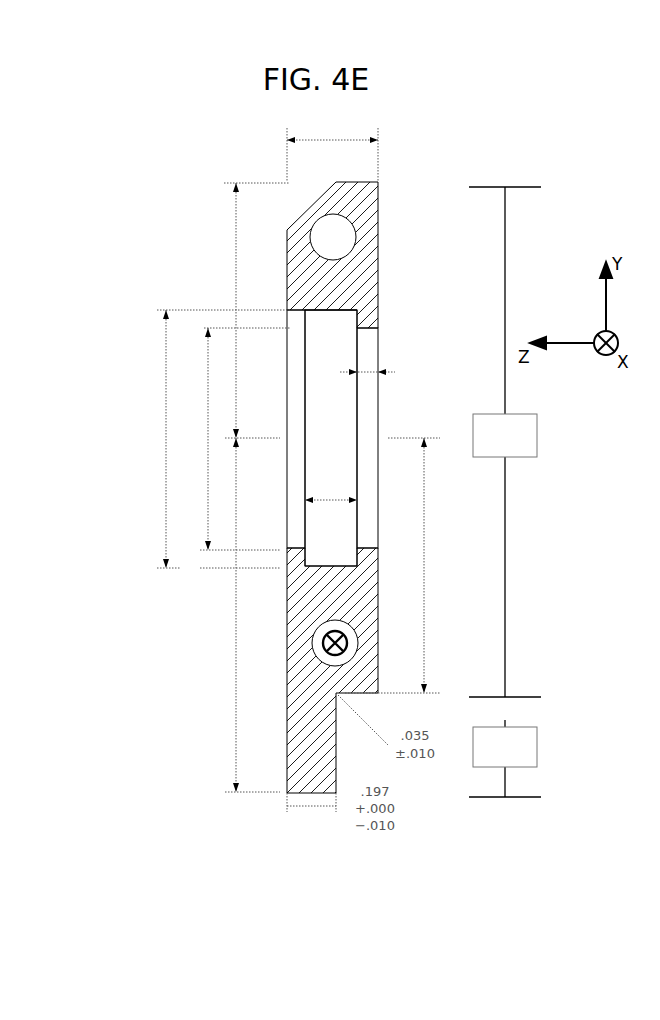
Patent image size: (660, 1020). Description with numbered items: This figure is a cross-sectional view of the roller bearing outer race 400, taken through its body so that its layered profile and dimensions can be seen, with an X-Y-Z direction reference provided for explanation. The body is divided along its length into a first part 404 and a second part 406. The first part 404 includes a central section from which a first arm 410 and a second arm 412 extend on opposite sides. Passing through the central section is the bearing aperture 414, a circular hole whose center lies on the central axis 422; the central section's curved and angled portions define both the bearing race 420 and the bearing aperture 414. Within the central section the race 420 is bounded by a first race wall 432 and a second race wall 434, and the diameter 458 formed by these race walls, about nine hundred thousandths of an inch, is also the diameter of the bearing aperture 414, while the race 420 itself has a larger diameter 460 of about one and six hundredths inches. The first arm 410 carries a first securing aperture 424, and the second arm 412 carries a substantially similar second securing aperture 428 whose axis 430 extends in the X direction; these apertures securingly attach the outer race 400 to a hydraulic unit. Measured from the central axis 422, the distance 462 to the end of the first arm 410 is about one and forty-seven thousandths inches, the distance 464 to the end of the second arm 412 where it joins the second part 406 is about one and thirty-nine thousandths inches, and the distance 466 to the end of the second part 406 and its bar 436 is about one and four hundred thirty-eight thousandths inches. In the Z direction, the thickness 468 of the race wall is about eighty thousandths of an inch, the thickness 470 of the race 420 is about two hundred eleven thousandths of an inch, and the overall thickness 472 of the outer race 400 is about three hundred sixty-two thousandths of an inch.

The roller bearing outer race 400 is at (441, 153).
The first part 404 is at (505, 442).
The second part 406 is at (505, 758).
The first arm 410 is at (370, 262).
The second arm 412 is at (370, 677).
The bearing aperture 414 is at (318, 342).
The bearing race 420 is at (337, 308).
The central axis 422 is at (403, 438).
The first securing aperture 424 is at (350, 218).
The second securing aperture 428 is at (360, 648).
The axis of second securing aperture 430 is at (325, 633).
The first race wall 432 is at (367, 485).
The second race wall 434 is at (287, 425).
The bar 436 is at (300, 760).
The diameter of central aperture 458 is at (207, 369).
The diameter of race 460 is at (164, 480).
The distance to end of first arm 462 is at (236, 219).
The distance to end of second arm 464 is at (427, 540).
The distance to end of second part 466 is at (236, 628).
The thickness of race wall 468 is at (392, 372).
The thickness of race 470 is at (333, 500).
The thickness of roller bearing outer race 472 is at (374, 127).